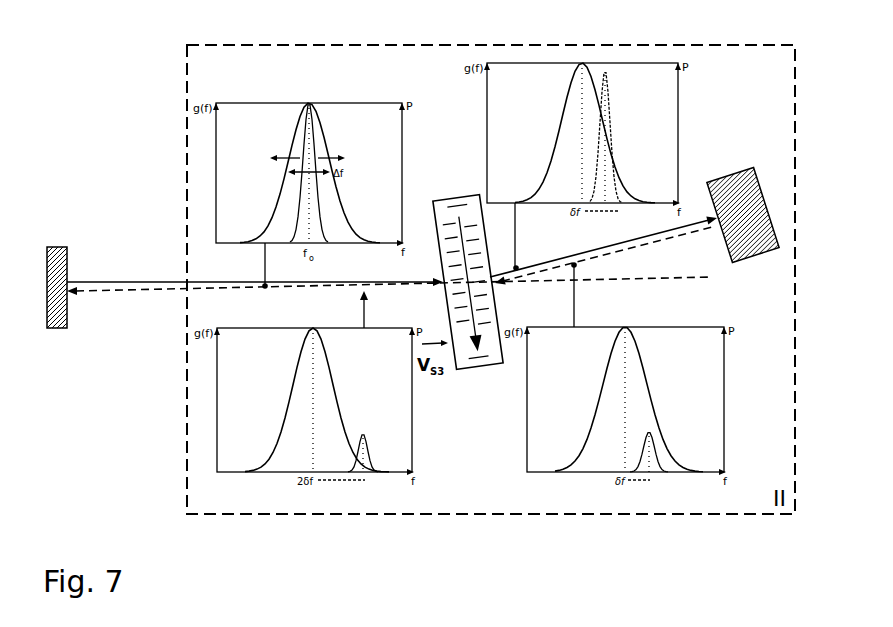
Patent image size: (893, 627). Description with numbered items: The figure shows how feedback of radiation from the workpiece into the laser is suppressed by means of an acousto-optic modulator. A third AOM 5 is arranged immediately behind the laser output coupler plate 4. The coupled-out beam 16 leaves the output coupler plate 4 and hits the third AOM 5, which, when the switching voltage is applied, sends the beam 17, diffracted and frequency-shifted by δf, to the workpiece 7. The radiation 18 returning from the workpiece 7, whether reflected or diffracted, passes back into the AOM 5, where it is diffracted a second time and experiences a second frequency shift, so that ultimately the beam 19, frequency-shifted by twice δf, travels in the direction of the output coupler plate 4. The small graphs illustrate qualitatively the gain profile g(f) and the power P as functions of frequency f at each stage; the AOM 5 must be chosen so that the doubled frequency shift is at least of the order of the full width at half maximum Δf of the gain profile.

The laser output coupler plate 4 is at (57, 328).
The third AOM 5 is at (472, 369).
The workpiece 7 is at (760, 254).
The coupled-out beam 16 is at (136, 283).
The diffracted and frequency-shifted beam 17 is at (691, 225).
The returning radiation 18 is at (694, 235).
The beam frequency-shifted by 2δf 19 is at (167, 296).